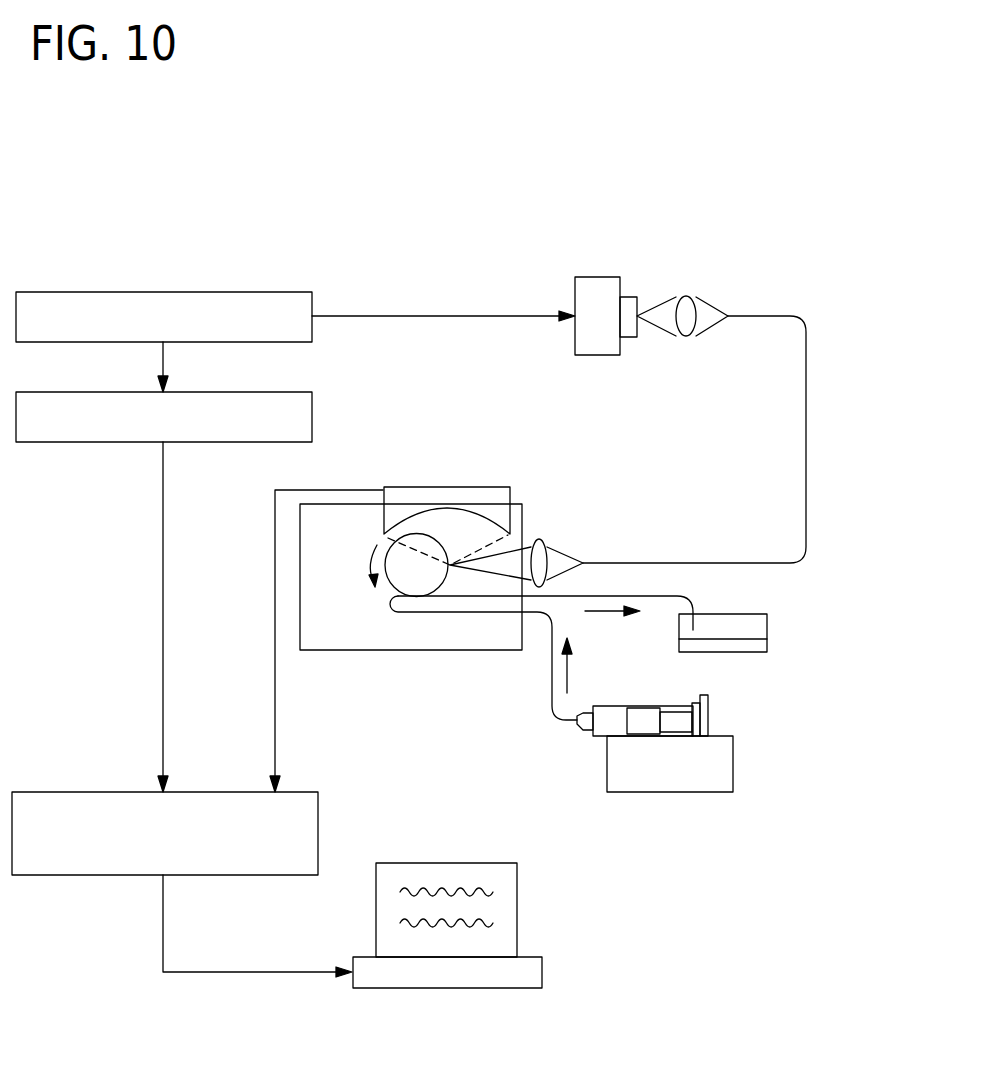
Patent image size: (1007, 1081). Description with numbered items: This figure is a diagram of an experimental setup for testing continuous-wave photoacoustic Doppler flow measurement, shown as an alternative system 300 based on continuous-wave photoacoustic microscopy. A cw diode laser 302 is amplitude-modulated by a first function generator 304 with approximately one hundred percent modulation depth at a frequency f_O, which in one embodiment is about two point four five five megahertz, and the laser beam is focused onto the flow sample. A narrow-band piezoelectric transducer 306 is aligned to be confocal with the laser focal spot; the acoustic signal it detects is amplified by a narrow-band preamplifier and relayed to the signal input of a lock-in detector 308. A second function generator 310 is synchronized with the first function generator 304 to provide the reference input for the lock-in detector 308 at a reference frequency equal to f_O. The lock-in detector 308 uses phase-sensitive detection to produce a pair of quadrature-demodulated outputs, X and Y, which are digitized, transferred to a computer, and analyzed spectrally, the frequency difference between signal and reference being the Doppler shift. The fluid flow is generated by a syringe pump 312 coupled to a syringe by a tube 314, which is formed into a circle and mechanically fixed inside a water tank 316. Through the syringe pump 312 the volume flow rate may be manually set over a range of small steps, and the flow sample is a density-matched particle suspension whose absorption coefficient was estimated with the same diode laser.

The system 300 is at (680, 165).
The cw diode laser 302 is at (613, 277).
The first function generator 304 is at (117, 292).
The transducer 306 is at (492, 487).
The lock-in detector 308 is at (318, 800).
The second function generator 310 is at (280, 392).
The syringe pump 312 is at (733, 752).
The tube 314 is at (550, 713).
The water tank 316 is at (383, 650).